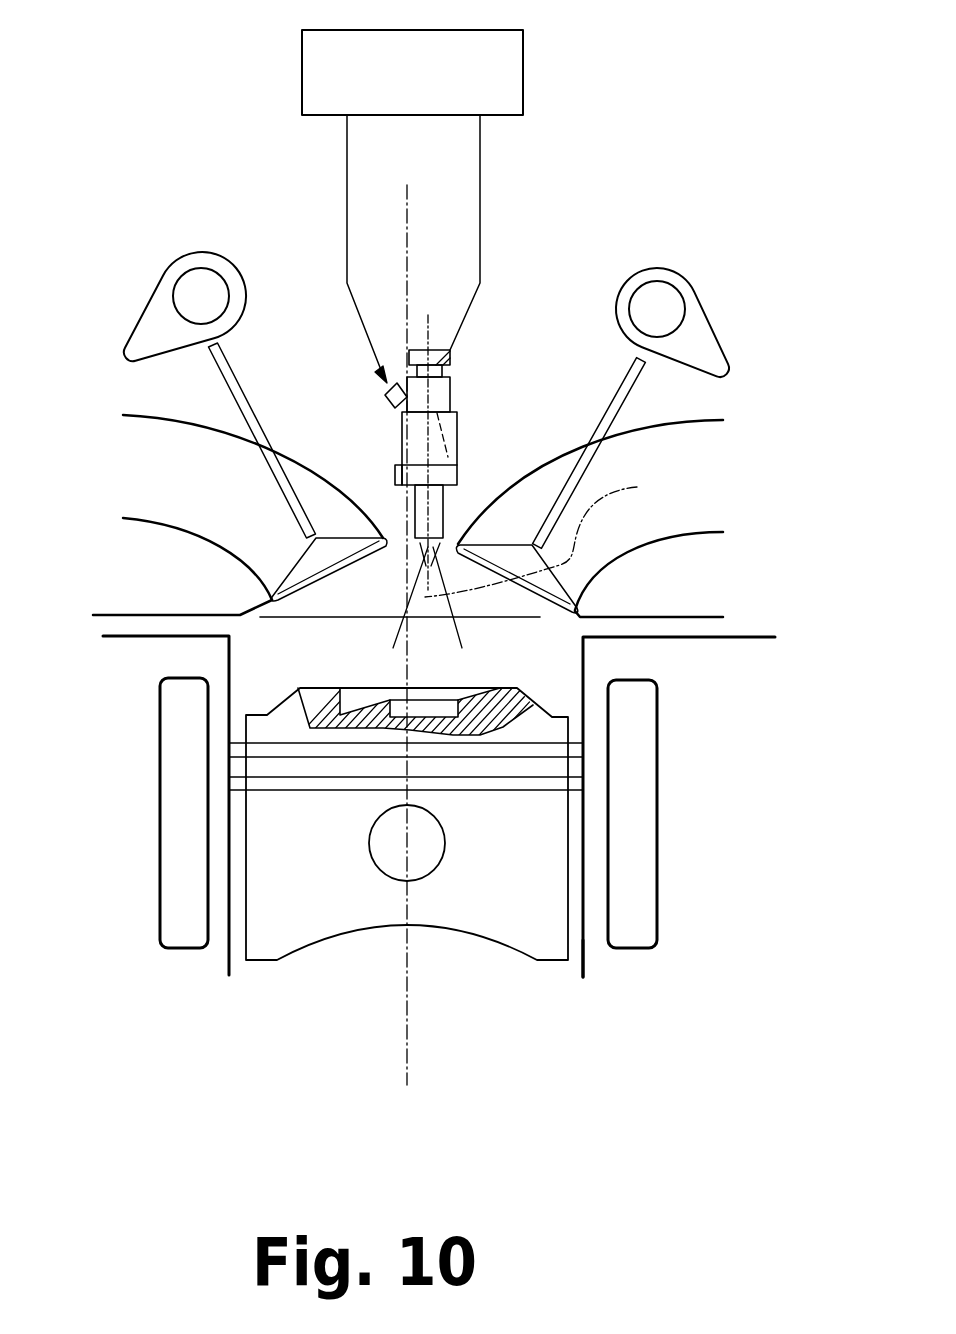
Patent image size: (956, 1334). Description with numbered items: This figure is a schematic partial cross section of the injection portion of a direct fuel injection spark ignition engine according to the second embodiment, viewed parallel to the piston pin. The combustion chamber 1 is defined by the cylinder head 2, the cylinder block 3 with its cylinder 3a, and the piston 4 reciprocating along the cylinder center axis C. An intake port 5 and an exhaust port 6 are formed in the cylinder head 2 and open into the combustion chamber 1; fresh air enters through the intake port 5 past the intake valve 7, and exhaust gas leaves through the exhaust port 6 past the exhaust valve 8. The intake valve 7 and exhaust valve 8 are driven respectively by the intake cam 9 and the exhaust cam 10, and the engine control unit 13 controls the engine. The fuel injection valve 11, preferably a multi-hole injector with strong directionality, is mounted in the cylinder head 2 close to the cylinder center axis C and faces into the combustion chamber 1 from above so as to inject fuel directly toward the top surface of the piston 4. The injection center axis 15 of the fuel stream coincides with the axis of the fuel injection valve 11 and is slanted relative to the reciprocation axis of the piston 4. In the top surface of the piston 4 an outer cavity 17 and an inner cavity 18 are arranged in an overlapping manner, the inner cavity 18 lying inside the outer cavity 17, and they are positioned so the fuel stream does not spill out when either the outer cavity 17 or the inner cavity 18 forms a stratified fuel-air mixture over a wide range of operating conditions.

The combustion chamber 1 is at (274, 672).
The cylinder head 2 is at (149, 585).
The cylinder block 3 is at (693, 780).
The cylinder 3a is at (587, 957).
The piston 4 is at (552, 925).
The intake port 5 is at (287, 440).
The exhaust port 6 is at (717, 417).
The intake valve 7 is at (237, 377).
The exhaust valve 8 is at (605, 403).
The intake cam 9 is at (225, 253).
The exhaust cam 10 is at (690, 280).
The fuel injection valve 11 is at (458, 447).
The engine control unit 13 is at (523, 78).
The injection center axis 15 is at (550, 533).
The outer cavity 17 is at (355, 690).
The inner cavity 18 is at (433, 708).
The cylinder center axis C is at (410, 242).